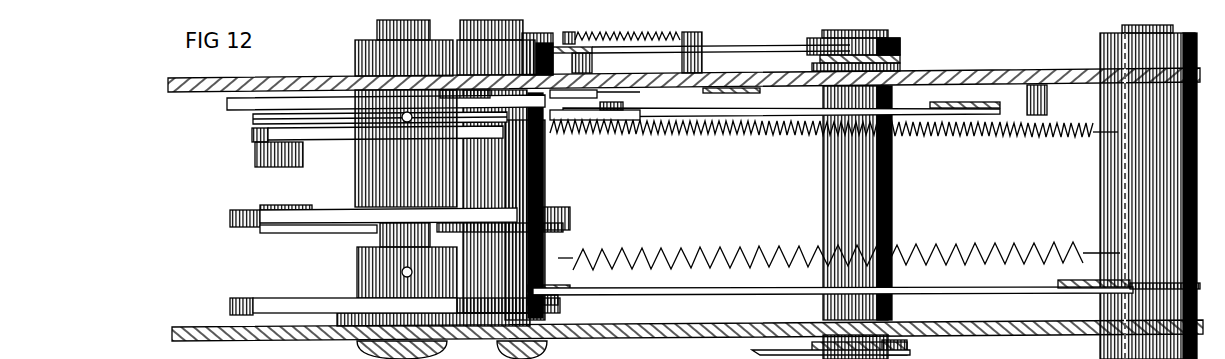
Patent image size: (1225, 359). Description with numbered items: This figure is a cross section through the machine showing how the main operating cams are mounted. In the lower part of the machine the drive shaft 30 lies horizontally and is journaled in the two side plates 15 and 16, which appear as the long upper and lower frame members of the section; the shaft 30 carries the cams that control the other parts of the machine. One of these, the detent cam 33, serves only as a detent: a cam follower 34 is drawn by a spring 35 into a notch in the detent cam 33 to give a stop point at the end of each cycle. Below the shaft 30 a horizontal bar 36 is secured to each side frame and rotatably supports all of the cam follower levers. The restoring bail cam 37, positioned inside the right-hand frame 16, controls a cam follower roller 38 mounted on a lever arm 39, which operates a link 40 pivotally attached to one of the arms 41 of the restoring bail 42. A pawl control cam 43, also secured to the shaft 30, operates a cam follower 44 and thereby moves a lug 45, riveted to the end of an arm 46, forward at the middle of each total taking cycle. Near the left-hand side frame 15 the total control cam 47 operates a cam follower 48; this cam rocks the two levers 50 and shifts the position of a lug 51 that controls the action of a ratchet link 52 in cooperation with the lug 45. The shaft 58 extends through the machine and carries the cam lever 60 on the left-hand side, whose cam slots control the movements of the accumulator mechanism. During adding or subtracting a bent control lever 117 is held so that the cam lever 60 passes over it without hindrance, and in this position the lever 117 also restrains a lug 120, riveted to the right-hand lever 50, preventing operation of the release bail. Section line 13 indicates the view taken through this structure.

The section line 13- 13 is at (67, 183).
The side plate 15 is at (187, 92).
The side plate 16 is at (200, 327).
The drive shaft 30 is at (387, 240).
The detent cam 33 is at (230, 220).
The cam follower 34 is at (265, 207).
The spring 35 is at (703, 247).
The horizontal bar 36 is at (633, 349).
The restoring bail cam 37 is at (275, 305).
The cam follower roller 38 is at (550, 298).
The lever arm 39 is at (565, 286).
The link 40 is at (945, 288).
The arm of the restoring bail 41 is at (1060, 281).
The restoring bail 42 is at (1105, 183).
The pawl control cam 43 is at (252, 134).
The cam follower 44 is at (257, 148).
The lug 45 is at (545, 62).
The arm 46 is at (268, 120).
The total control cam 47 is at (325, 103).
The cam follower 48 is at (550, 102).
The levers 50 is at (745, 91).
The lug 51 is at (583, 107).
The ratchet link 52 is at (902, 112).
The shaft 58 is at (843, 203).
The cam lever 60 is at (890, 38).
The bent control lever 117 is at (790, 46).
The lug 120 is at (702, 40).